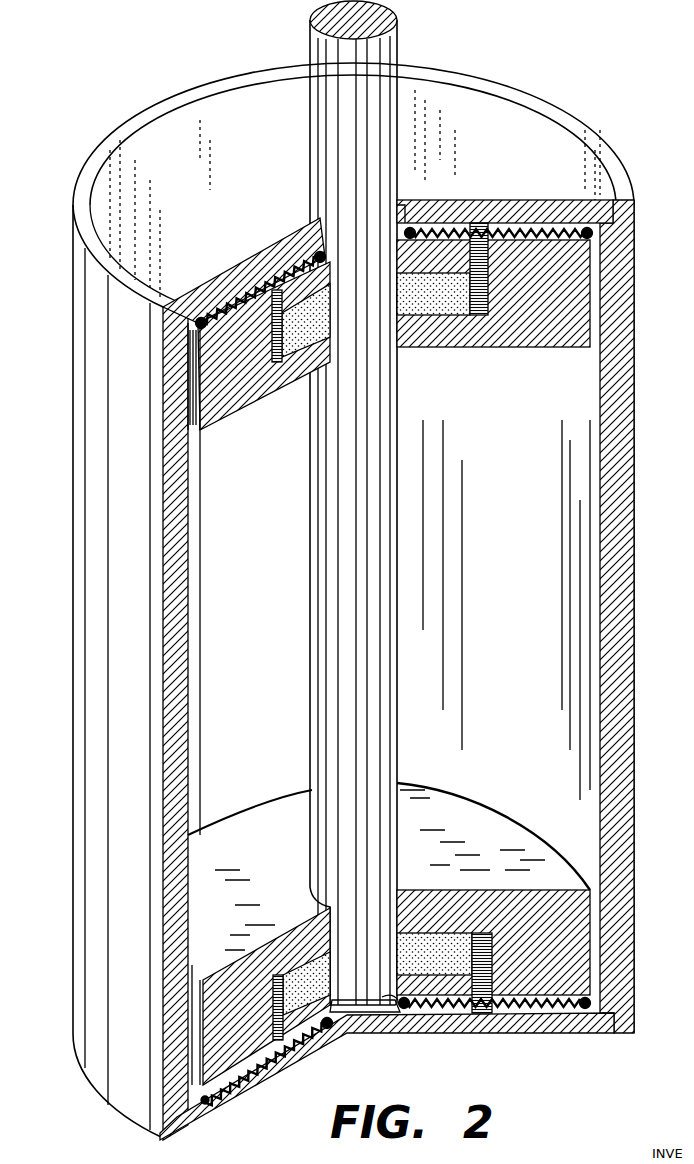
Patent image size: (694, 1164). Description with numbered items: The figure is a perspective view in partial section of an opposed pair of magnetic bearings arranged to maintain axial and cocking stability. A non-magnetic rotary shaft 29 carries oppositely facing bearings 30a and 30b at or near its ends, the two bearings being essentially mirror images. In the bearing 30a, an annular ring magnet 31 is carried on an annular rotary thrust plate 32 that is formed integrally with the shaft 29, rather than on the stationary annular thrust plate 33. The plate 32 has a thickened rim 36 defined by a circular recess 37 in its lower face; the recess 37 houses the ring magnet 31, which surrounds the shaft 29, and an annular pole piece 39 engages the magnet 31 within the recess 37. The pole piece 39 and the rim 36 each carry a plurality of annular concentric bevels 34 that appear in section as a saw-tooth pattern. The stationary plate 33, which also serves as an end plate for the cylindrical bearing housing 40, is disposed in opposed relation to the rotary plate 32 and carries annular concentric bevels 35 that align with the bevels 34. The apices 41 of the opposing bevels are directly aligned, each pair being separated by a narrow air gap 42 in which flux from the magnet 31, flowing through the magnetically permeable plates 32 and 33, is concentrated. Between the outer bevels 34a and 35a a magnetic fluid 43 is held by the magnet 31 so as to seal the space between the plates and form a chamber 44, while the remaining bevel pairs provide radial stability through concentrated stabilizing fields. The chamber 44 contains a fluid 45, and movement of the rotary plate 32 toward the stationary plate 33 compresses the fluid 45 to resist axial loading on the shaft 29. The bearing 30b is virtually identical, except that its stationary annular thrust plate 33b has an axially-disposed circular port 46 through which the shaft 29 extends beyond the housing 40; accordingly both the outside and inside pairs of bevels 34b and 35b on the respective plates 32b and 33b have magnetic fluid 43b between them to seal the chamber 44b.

The rotary shaft 29 is at (397, 25).
The bearing 30a is at (378, 959).
The bearing 30b is at (424, 303).
The annular ring magnet 31 is at (448, 962).
The annular rotary thrust plate 32 is at (437, 893).
The rotary thrust plate 32b is at (283, 333).
The stationary annular thrust plate 33 is at (467, 1030).
The stationary annular thrust plate 33b is at (232, 245).
The annular concentric bevels 34 is at (516, 998).
The outer bevel 34a is at (192, 1088).
The bevels 34b is at (322, 268).
The annular concentric bevels 35 is at (540, 1017).
The outer bevel 35a is at (212, 1097).
The bevels 35b is at (322, 254).
The thickened rim 36 is at (535, 930).
The circular recess 37 is at (492, 952).
The annular pole piece 39 is at (293, 1020).
The cylindrical bearing housing 40 is at (634, 896).
The apices 41 is at (298, 1052).
The air gap 42 is at (404, 1010).
The magnetic fluid 43 is at (585, 1008).
The magnetic fluid 43b is at (590, 232).
The chamber 44 is at (582, 997).
The chamber 44b is at (278, 272).
The fluid 45 is at (412, 1008).
The circular port 46 is at (405, 203).